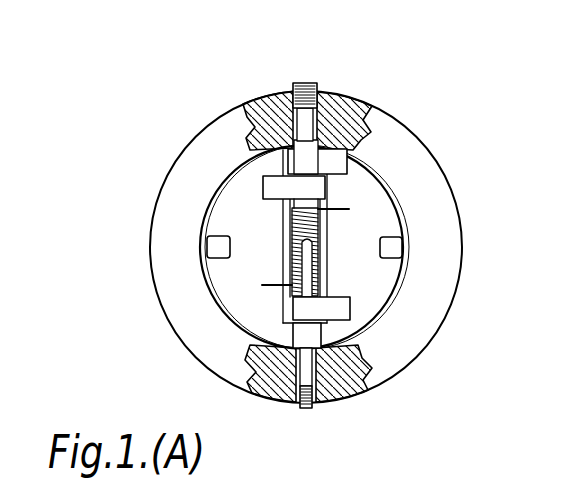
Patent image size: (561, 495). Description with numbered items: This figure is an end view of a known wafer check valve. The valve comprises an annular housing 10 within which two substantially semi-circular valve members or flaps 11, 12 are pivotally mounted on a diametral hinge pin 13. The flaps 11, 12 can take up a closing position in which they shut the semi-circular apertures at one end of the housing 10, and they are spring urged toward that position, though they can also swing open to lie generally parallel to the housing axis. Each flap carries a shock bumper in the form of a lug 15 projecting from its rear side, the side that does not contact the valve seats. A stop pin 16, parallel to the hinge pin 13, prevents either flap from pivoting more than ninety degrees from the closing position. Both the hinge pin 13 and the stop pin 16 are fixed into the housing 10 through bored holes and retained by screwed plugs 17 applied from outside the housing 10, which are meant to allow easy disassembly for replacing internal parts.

The annular housing 10 is at (420, 158).
The valve member 11 is at (266, 257).
The valve member 12 is at (369, 257).
The hinge pin 13 is at (333, 100).
The lug 15 is at (398, 246).
The stop pin 16 is at (301, 368).
The screwed plug 17 is at (305, 82).